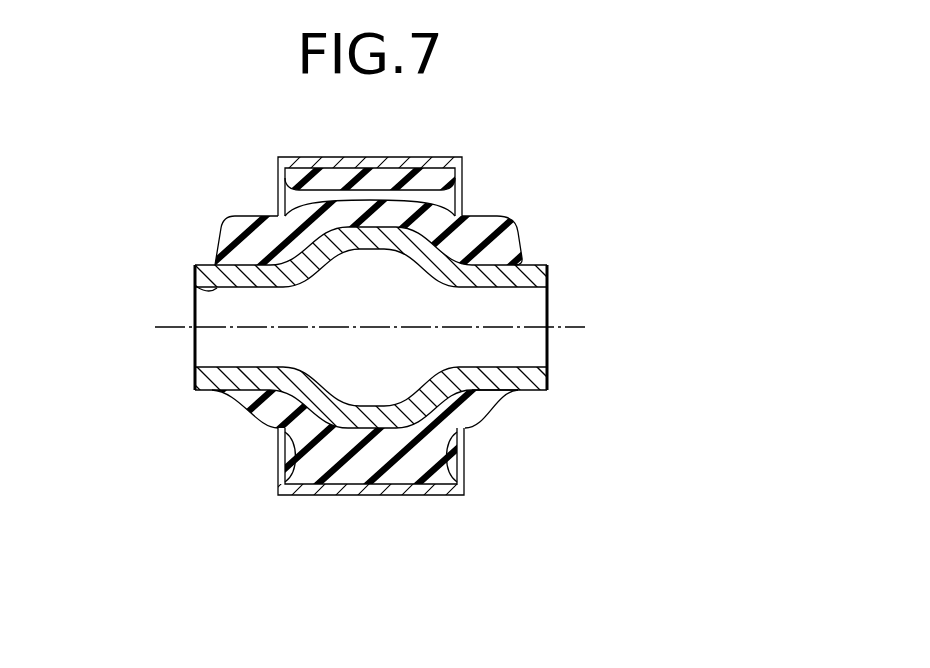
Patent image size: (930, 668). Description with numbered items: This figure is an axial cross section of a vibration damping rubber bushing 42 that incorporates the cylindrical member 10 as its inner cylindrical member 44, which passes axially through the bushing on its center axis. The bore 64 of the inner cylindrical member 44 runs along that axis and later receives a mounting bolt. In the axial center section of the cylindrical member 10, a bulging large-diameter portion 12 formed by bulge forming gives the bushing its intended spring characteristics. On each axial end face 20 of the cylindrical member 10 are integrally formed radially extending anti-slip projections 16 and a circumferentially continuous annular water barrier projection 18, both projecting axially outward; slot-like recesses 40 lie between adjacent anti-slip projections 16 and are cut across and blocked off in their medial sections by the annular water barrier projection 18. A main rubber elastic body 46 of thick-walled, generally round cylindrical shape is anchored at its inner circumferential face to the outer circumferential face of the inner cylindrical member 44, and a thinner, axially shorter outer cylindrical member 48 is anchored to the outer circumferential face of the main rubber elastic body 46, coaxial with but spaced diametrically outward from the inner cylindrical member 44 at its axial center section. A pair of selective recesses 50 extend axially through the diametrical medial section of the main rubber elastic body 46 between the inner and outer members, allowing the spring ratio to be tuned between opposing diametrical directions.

The cylindrical member 10 is at (425, 325).
The bulging large-diameter portion 12 is at (389, 415).
The anti-slip projections 16 is at (193, 317).
The annular water barrier projection 18 is at (190, 383).
The axial end face 20 is at (177, 339).
The slot-like recesses 40 is at (194, 272).
The vibration damping rubber bushing 42 is at (525, 154).
The inner cylindrical member 44 is at (490, 380).
The main rubber elastic body 46 is at (303, 438).
The outer cylindrical member 48 is at (357, 487).
The selective recesses 50 is at (408, 197).
The bore 64 is at (216, 288).